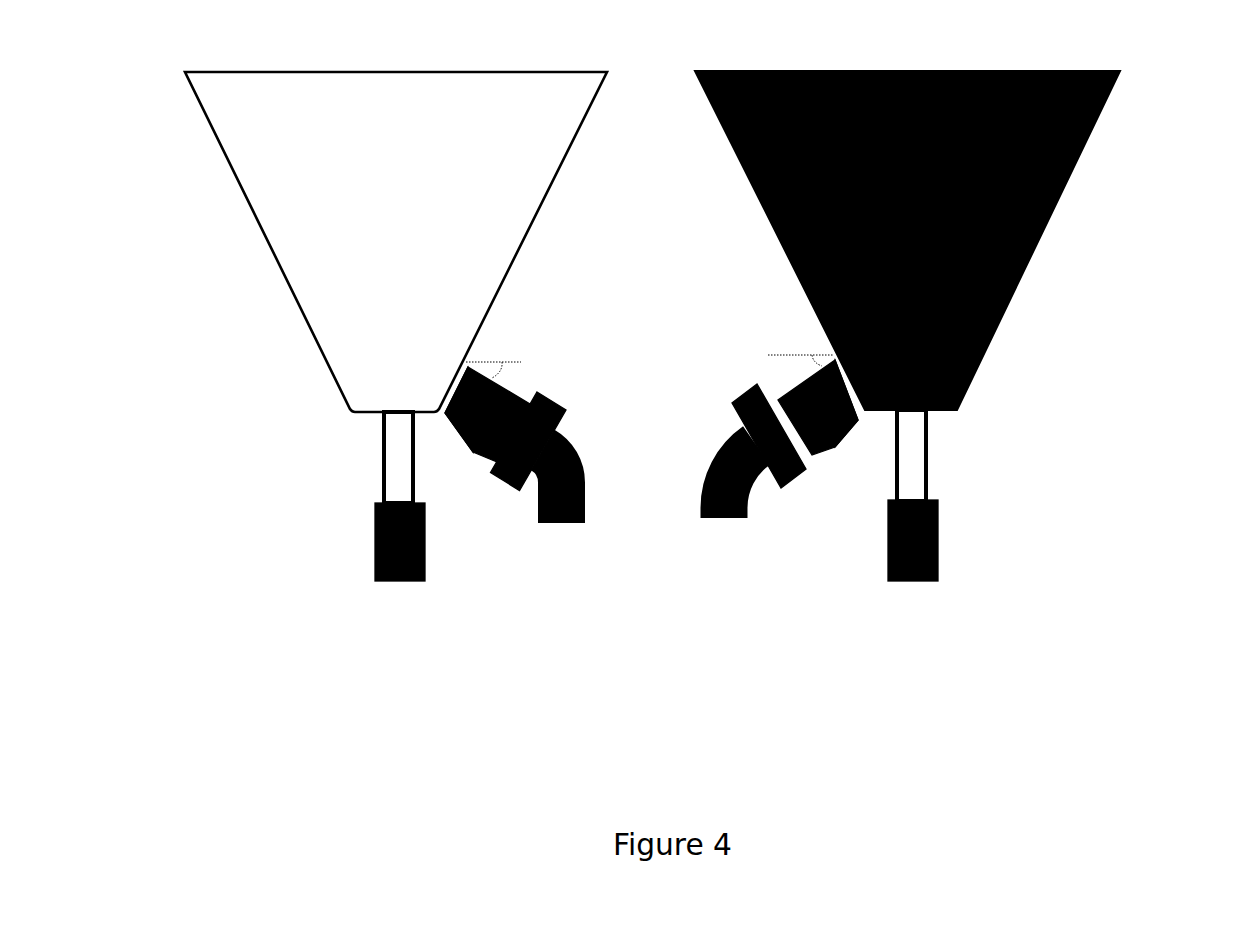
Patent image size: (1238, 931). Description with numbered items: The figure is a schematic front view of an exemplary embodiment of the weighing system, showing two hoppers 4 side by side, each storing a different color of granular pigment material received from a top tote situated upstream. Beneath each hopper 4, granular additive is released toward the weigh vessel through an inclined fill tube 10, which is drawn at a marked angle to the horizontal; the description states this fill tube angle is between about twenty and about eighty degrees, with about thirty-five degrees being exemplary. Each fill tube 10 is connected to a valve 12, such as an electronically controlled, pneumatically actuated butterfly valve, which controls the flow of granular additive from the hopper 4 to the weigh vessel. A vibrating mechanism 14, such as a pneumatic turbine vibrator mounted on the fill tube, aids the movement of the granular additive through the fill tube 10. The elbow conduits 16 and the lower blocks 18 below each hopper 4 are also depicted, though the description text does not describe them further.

The hopper 4 is at (248, 203).
The fill tube 10 is at (782, 397).
The valve 12 is at (738, 402).
The vibrating mechanism 14 is at (448, 422).
The elbow supply pipe 16 is at (857, 488).
The mounting block 18 is at (900, 583).